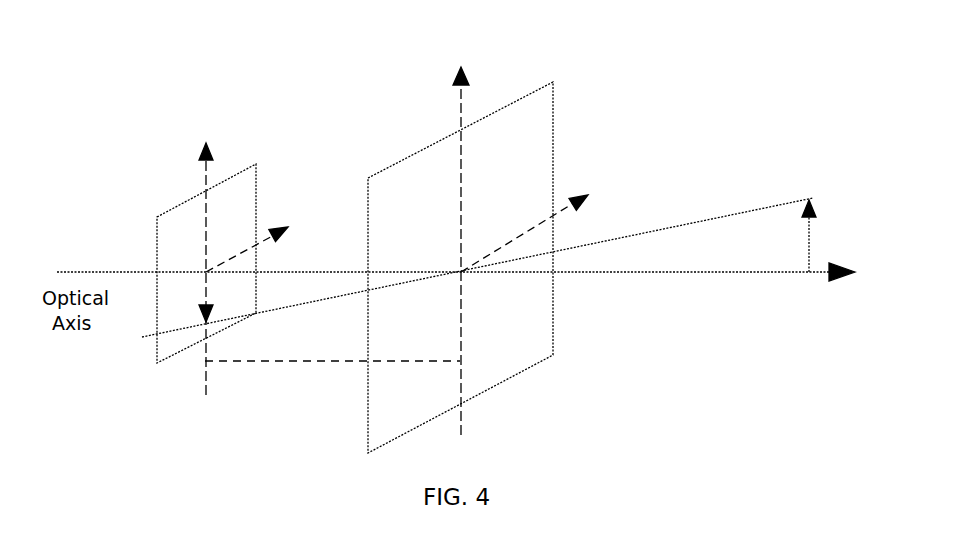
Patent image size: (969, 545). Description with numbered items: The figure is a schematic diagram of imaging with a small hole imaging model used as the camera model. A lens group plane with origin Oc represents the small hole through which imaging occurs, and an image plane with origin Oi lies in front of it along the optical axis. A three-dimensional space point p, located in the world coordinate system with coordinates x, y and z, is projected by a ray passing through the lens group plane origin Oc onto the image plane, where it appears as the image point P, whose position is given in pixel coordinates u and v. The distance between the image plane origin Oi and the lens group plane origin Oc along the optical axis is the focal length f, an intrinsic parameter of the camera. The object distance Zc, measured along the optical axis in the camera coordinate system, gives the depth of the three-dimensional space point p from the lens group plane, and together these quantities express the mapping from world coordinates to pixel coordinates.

The image plane origin Oi is at (196, 255).
The lens group plane origin Oc is at (481, 247).
The object distance Zc is at (456, 295).
The three-dimensional space point p is at (487, 259).
The image point p' P is at (189, 339).
The focal length f is at (332, 347).